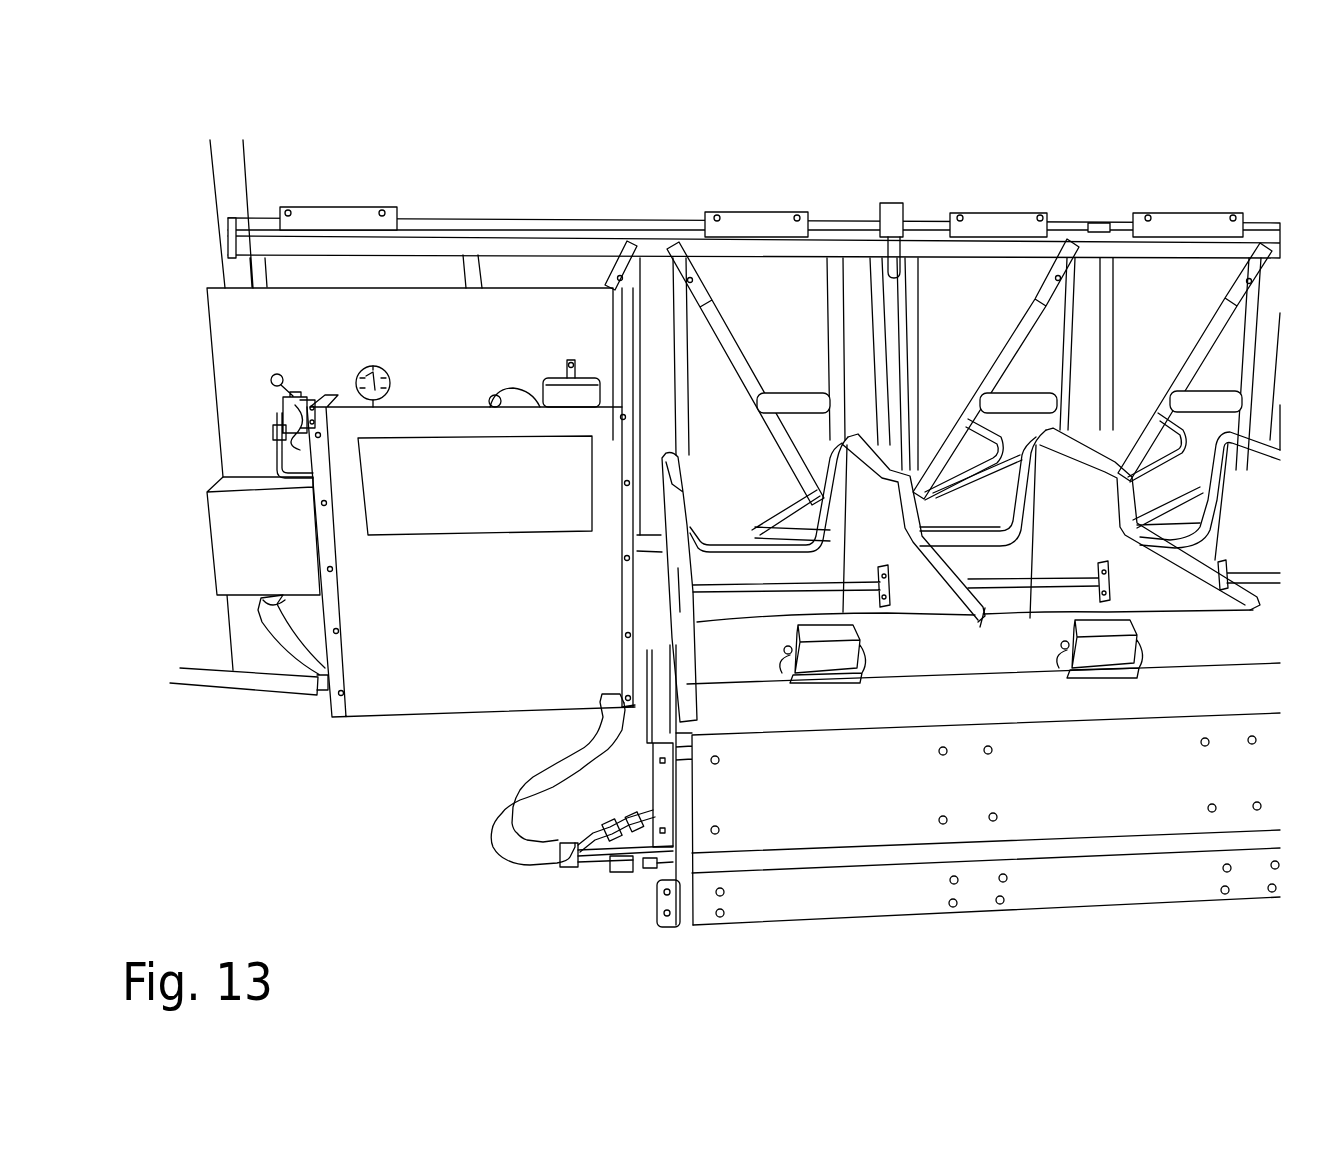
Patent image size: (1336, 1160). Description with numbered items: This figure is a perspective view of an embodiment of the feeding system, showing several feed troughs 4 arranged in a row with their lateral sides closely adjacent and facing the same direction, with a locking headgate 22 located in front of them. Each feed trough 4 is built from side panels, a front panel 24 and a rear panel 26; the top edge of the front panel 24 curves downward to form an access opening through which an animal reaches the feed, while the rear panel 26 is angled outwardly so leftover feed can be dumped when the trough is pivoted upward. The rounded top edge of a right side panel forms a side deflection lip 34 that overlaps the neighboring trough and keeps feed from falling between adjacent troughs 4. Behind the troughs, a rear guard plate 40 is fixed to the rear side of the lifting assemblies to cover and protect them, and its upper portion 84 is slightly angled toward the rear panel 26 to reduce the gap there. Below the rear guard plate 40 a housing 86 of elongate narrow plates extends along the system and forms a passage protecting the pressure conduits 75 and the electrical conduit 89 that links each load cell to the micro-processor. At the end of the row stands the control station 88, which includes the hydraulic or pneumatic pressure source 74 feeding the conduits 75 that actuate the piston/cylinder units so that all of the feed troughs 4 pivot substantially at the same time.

The feed trough 4 is at (862, 492).
The locking headgate 22 is at (693, 245).
The front panel 24 is at (708, 567).
The rear panel 26 is at (897, 655).
The side deflection lip 34 is at (1070, 487).
The rear guard plate 40 is at (780, 808).
The pressure source 74 is at (483, 360).
The pressure conduit 75 is at (547, 782).
The upper portion of the rear guard plate 84 is at (1007, 705).
The housing 86 is at (743, 905).
The control station 88 is at (412, 368).
The electrical conduit 89 is at (502, 827).